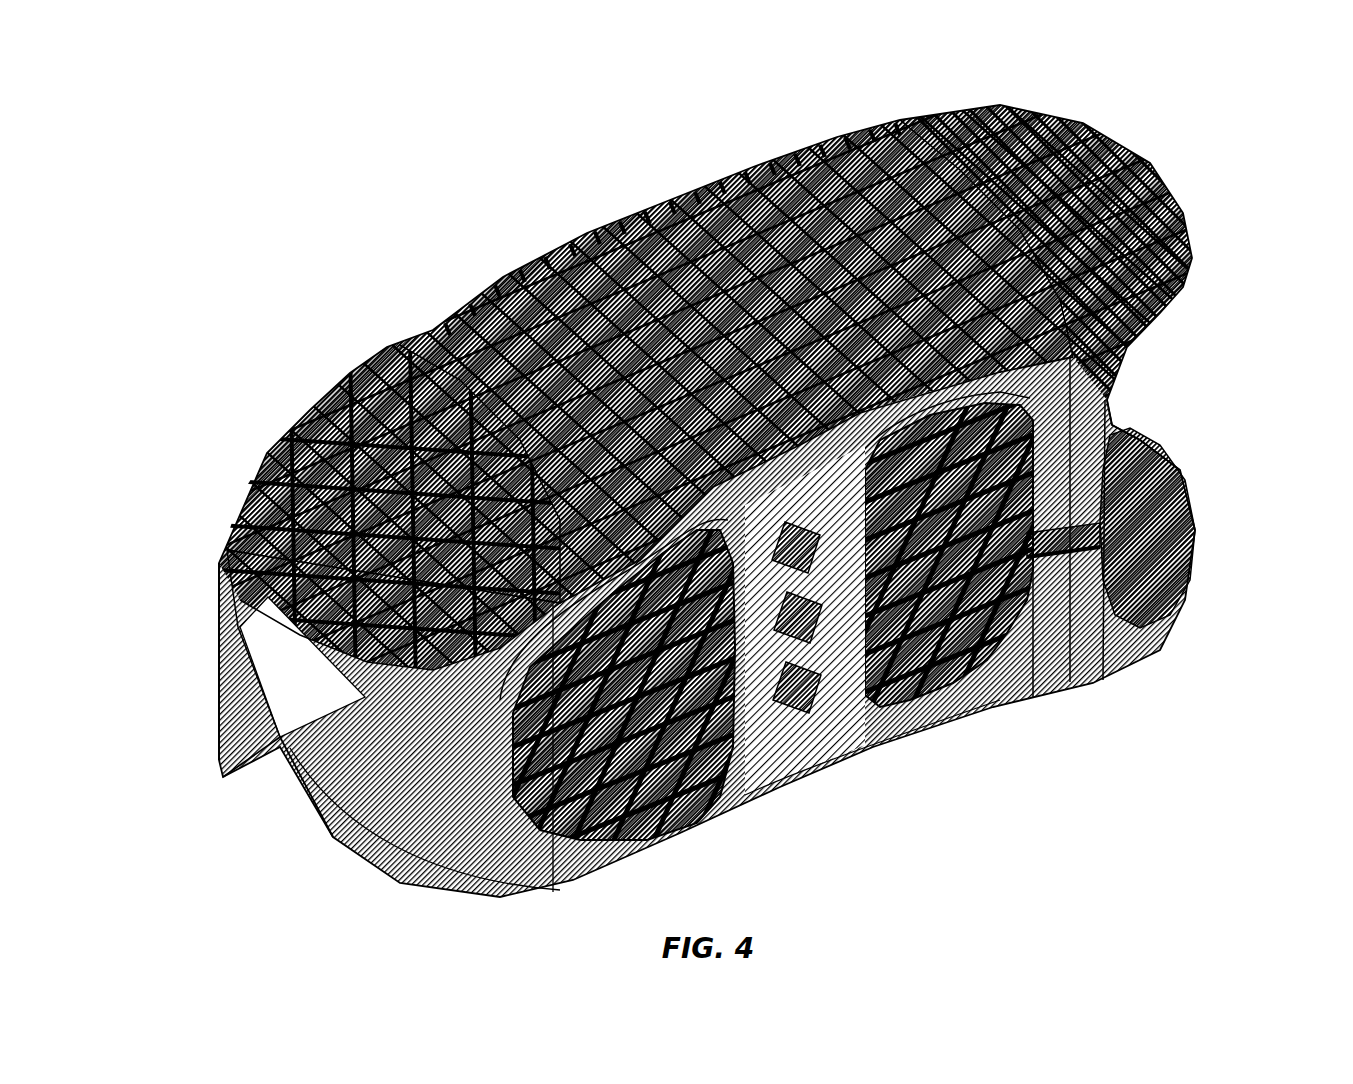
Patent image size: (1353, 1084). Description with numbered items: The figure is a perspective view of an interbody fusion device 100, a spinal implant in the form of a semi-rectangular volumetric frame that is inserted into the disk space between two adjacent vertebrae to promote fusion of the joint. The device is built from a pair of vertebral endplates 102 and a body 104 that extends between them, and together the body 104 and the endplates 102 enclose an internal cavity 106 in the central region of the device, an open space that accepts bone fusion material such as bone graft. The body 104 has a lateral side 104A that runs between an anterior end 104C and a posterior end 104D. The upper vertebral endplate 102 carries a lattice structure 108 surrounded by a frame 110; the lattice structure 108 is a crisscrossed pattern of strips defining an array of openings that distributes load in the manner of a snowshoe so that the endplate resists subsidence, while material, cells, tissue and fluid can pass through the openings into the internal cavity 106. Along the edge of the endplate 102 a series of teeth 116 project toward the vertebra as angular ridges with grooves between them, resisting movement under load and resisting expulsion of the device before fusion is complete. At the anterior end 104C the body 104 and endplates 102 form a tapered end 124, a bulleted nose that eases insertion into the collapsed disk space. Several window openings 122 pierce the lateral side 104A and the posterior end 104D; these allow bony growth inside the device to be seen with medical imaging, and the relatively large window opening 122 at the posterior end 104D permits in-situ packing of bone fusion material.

The interbody fusion device 100 is at (303, 200).
The vertebral endplate 102 is at (305, 412).
The body 104 is at (427, 815).
The lateral side 104A is at (822, 650).
The anterior end 104C is at (192, 622).
The posterior end 104D is at (1172, 382).
The internal cavity 106 is at (905, 602).
The lattice structure 108 is at (865, 225).
The frame 110 is at (937, 140).
The teeth 116 is at (771, 167).
The window opening 122 is at (1132, 490).
The tapered end 124 is at (282, 752).